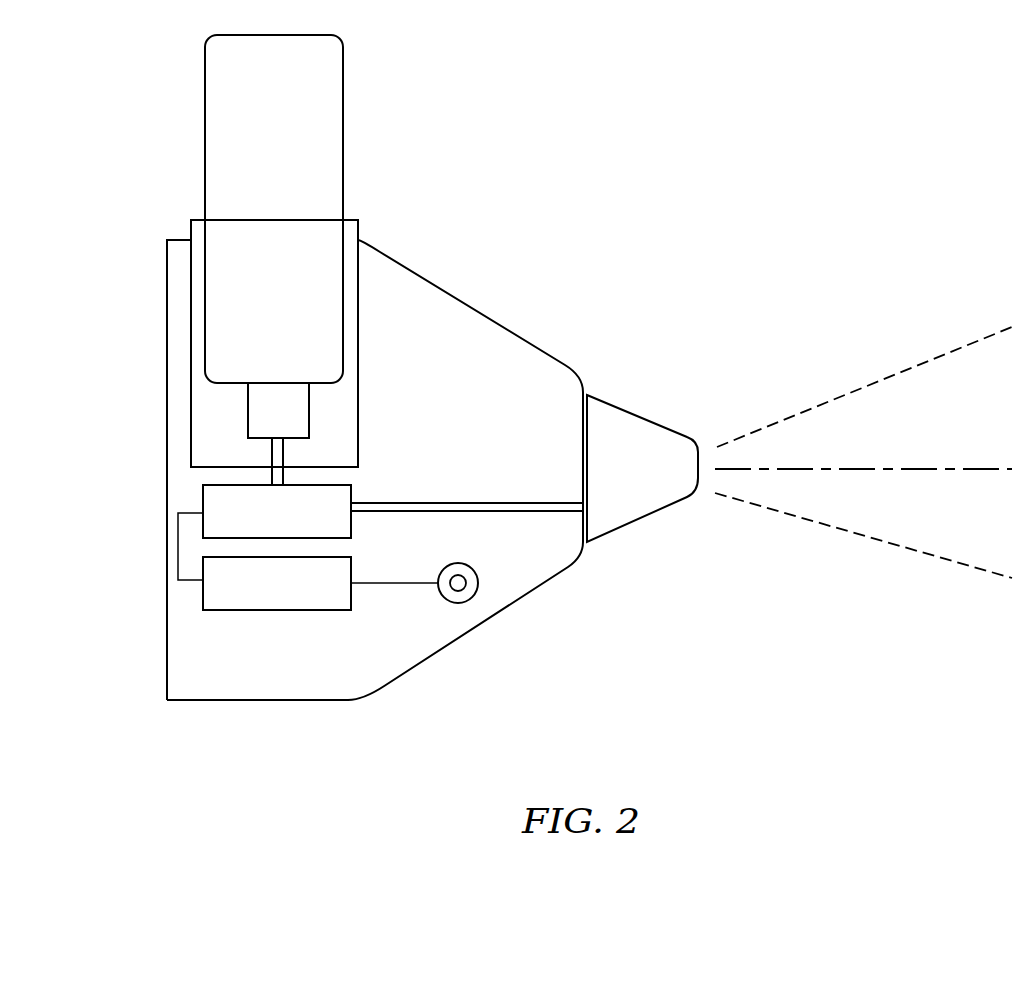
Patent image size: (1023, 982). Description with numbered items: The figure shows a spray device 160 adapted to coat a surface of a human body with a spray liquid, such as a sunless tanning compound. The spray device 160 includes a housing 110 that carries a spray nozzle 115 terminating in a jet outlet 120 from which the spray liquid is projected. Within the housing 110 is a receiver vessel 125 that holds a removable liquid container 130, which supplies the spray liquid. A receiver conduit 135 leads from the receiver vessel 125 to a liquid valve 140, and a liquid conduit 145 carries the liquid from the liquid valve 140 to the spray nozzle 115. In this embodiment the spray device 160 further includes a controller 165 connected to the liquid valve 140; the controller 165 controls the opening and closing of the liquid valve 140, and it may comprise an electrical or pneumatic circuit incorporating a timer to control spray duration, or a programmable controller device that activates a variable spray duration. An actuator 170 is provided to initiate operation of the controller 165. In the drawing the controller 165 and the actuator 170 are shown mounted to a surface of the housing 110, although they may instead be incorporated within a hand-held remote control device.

The housing 110 is at (322, 711).
The spray nozzle 115 is at (620, 392).
The jet outlet 120 is at (711, 464).
The receiver vessel 125 is at (308, 294).
The removable liquid container 130 is at (316, 176).
The receiver conduit 135 is at (260, 453).
The liquid valve 140 is at (264, 532).
The liquid conduit 145 is at (516, 492).
The spray device 160 is at (154, 110).
The controller 165 is at (320, 583).
The actuator 170 is at (474, 596).